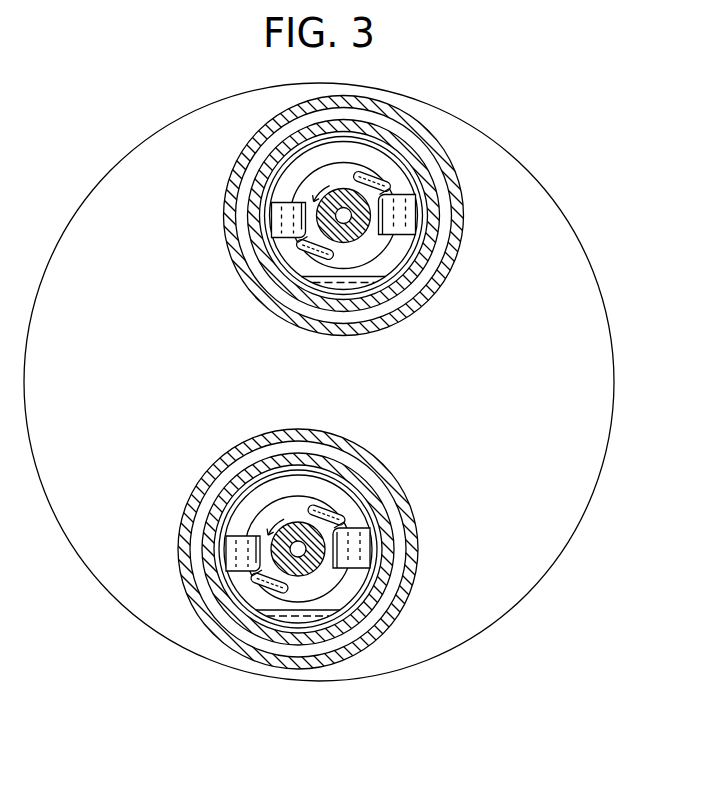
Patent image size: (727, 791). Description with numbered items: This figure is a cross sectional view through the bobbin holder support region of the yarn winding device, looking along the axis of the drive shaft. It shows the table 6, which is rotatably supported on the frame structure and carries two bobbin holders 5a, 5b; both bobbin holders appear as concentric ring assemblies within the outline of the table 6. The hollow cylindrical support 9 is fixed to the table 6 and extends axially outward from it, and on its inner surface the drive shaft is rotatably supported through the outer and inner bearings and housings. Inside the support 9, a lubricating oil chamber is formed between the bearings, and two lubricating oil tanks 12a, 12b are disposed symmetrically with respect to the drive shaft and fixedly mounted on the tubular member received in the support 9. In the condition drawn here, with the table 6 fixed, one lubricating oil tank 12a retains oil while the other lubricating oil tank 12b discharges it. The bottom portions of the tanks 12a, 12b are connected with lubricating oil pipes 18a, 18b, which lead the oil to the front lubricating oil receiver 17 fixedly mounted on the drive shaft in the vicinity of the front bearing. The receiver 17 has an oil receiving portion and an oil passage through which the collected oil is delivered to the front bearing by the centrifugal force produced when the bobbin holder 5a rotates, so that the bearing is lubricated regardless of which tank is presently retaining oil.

The bobbin holder 5a is at (344, 216).
The bobbin holder 5b is at (409, 508).
The table 6 is at (577, 240).
The hollow cylindrical support 9 is at (426, 213).
The lubricating oil tank 12a is at (273, 238).
The lubricating oil tank 12b is at (405, 194).
The front lubricating oil receiver 17 is at (303, 182).
The lubricating oil pipe 18a is at (306, 261).
The lubricating oil pipe 18b is at (372, 174).